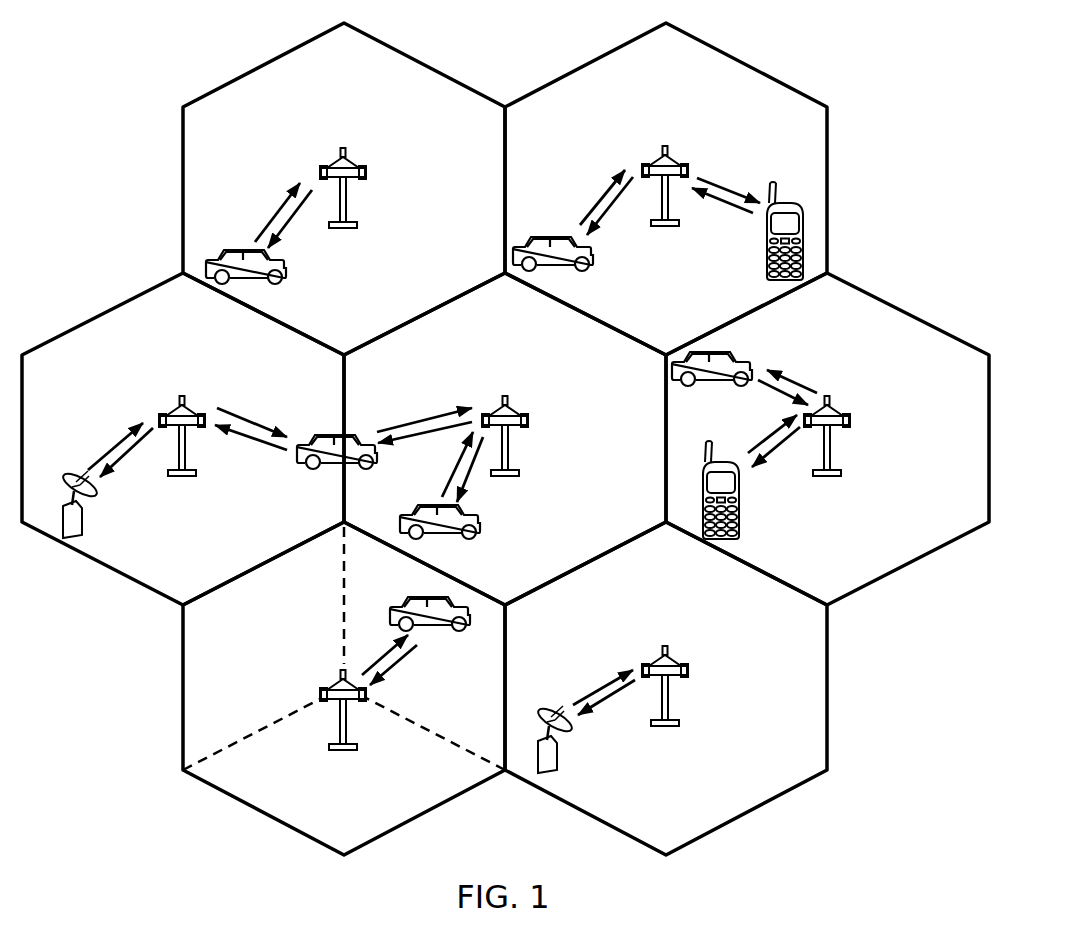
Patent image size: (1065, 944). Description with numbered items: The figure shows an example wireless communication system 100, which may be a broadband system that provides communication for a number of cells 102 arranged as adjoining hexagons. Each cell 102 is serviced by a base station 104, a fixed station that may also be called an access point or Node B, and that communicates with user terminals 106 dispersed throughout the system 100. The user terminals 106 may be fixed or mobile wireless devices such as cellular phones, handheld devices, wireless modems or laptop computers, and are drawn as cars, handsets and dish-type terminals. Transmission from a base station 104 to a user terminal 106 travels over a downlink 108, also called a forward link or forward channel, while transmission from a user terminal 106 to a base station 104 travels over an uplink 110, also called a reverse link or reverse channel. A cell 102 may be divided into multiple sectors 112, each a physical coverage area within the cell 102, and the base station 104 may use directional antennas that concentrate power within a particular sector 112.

The wireless communication system 100 is at (980, 108).
The cell 102 is at (273, 58).
The base station 104 is at (343, 148).
The user terminal 106 is at (288, 278).
The downlink 108 is at (288, 228).
The uplink 110 is at (278, 210).
The sector 112 is at (402, 808).